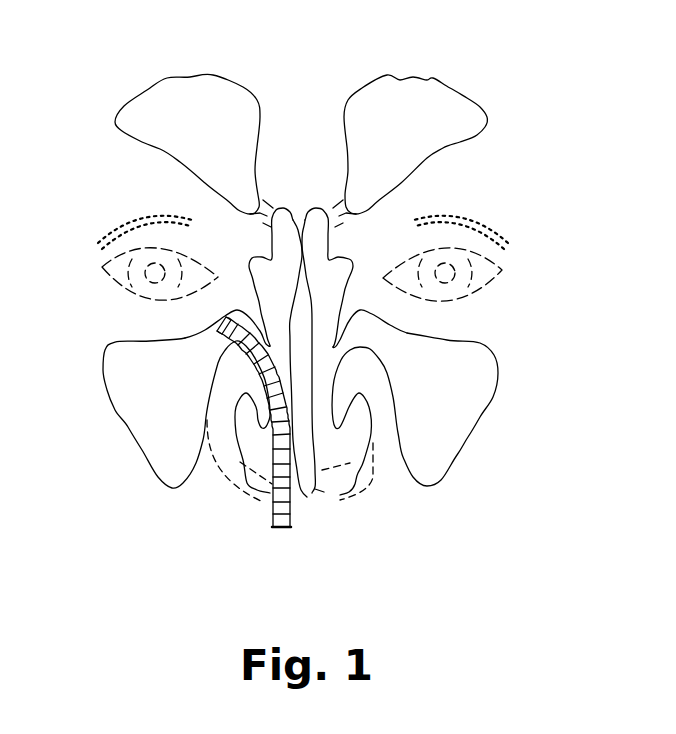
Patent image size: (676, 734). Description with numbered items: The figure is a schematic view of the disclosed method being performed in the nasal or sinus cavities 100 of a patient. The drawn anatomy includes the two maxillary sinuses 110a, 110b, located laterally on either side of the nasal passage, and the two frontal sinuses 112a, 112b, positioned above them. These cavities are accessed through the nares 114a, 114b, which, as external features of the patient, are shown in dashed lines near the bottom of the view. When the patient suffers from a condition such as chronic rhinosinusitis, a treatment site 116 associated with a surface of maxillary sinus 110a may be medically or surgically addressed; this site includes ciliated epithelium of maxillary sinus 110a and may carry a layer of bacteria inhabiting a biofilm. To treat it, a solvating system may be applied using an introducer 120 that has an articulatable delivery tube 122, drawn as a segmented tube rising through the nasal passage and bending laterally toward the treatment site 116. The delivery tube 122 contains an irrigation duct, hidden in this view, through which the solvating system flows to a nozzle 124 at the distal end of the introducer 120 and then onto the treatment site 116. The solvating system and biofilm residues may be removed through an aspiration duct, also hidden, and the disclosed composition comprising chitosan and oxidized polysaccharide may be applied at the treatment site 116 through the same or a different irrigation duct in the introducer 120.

The nasal or sinus cavities 100 is at (486, 71).
The frontal sinus 112a is at (141, 95).
The frontal sinus 112b is at (488, 106).
The maxillary sinus 110a is at (126, 428).
The maxillary sinus 110b is at (466, 440).
The treatment site 116 is at (219, 313).
The introducer 120 is at (297, 436).
The articulatable delivery tube 122 is at (283, 508).
The nozzle 124 is at (219, 332).
The naris 114a is at (261, 503).
The naris 114b is at (337, 503).